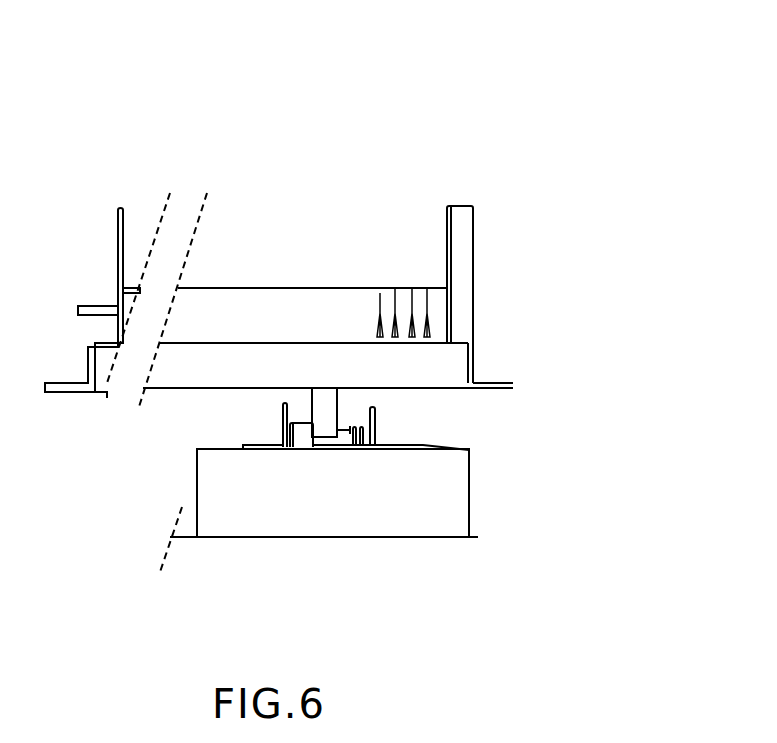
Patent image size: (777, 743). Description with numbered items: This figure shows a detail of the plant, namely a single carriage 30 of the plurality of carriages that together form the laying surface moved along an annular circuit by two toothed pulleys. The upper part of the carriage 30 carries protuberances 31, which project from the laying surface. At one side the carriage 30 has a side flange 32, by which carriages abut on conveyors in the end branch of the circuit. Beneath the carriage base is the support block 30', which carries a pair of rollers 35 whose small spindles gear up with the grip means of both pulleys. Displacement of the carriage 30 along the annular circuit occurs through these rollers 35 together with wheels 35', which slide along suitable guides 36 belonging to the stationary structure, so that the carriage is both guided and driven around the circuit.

The carriage 30 is at (279, 205).
The protuberances 31 is at (413, 320).
The side flanges 32 is at (485, 383).
The support block 30' is at (479, 412).
The rollers 35 is at (435, 471).
The wheels 35' is at (319, 538).
The guides 36 is at (283, 435).